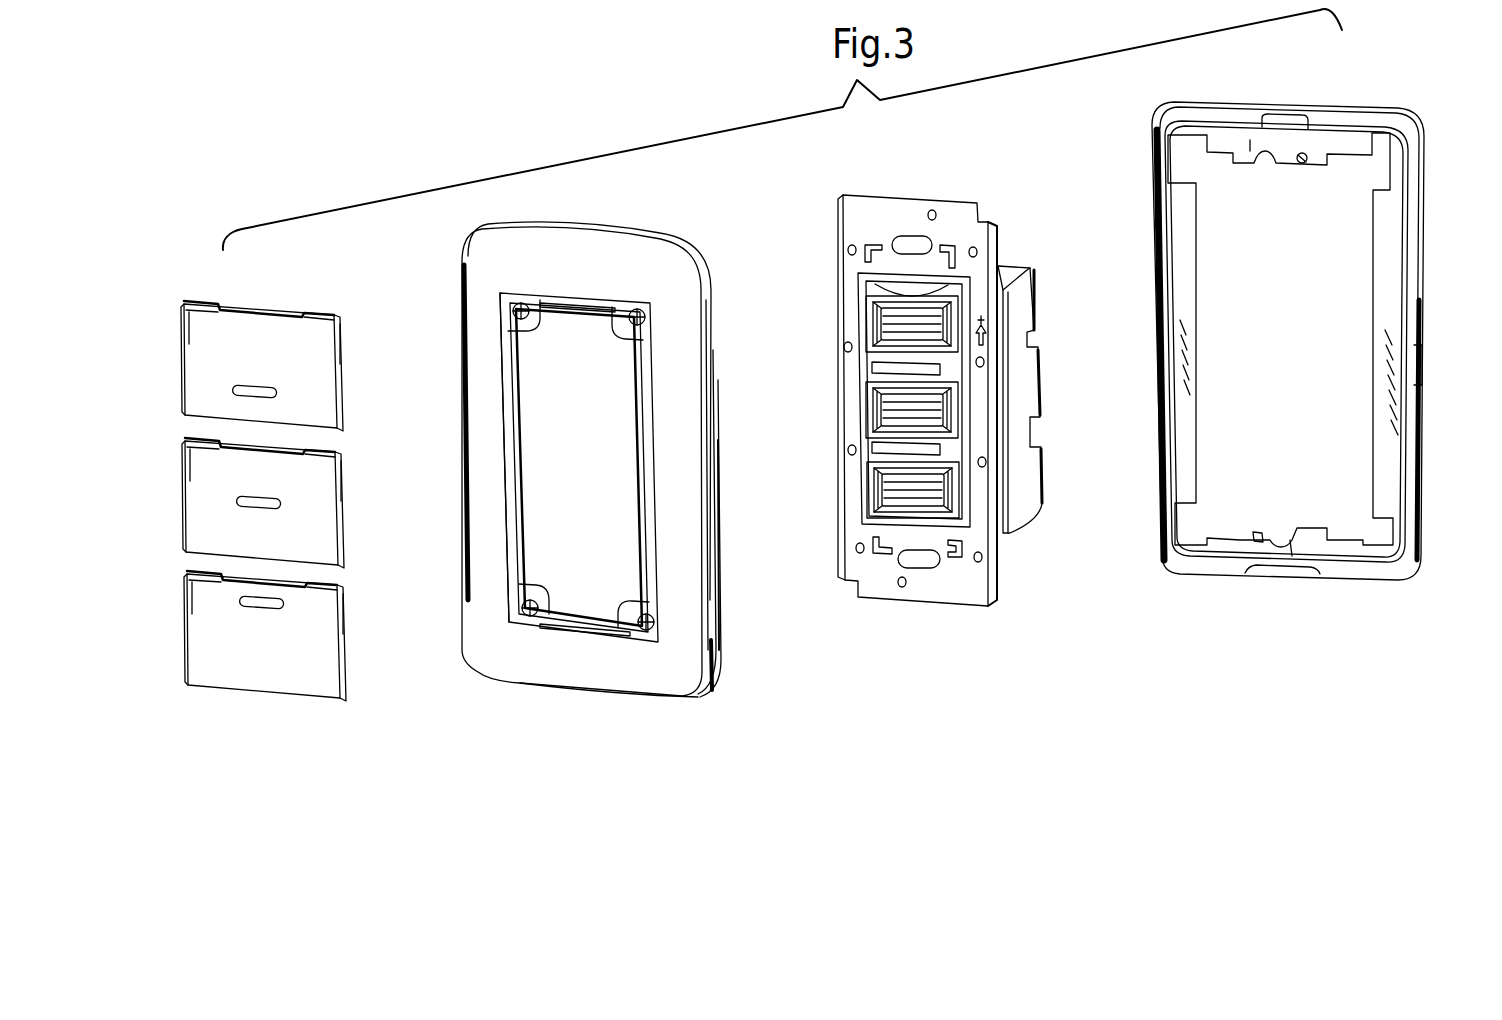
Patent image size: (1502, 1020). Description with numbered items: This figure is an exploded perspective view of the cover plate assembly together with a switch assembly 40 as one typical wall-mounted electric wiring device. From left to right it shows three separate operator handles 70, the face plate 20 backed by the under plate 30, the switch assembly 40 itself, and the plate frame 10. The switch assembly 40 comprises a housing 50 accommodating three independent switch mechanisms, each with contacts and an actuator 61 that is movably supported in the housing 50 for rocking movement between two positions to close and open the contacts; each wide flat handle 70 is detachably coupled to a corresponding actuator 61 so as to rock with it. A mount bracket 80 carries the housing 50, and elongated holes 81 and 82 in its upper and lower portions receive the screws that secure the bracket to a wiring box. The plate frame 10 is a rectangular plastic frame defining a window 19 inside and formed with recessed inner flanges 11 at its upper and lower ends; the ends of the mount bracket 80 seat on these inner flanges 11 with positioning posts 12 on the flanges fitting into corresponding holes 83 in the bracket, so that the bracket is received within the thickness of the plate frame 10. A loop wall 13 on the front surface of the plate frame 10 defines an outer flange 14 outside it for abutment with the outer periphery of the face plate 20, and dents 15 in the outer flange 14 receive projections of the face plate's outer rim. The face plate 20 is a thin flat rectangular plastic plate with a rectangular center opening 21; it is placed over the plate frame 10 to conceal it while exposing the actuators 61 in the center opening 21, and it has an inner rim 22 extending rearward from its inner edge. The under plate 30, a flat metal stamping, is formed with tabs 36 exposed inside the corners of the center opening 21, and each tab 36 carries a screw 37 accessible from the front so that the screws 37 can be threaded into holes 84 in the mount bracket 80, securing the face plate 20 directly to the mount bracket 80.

The plate frame 10 is at (1396, 578).
The recessed inner flange 11 is at (1250, 164).
The positioning post 12 is at (1302, 164).
The loop wall 13 is at (1383, 276).
The outer flange 14 is at (1412, 320).
The dent 15 is at (1286, 116).
The window 19 is at (1338, 411).
The face plate 20 is at (699, 696).
The center opening 21 is at (512, 518).
The inner rim 22 is at (708, 358).
The under plate 30 is at (516, 441).
The tab 36 is at (534, 325).
The screw 37 is at (648, 318).
The switch assembly 40 is at (1004, 276).
The housing 50 is at (1033, 306).
The actuator 61 is at (868, 326).
The operator handle 70 is at (185, 350).
The mount bracket 80 is at (990, 607).
The elongated hole 81 is at (910, 237).
The elongated hole 82 is at (920, 560).
The hole 83 is at (934, 211).
The hole 84 is at (849, 249).